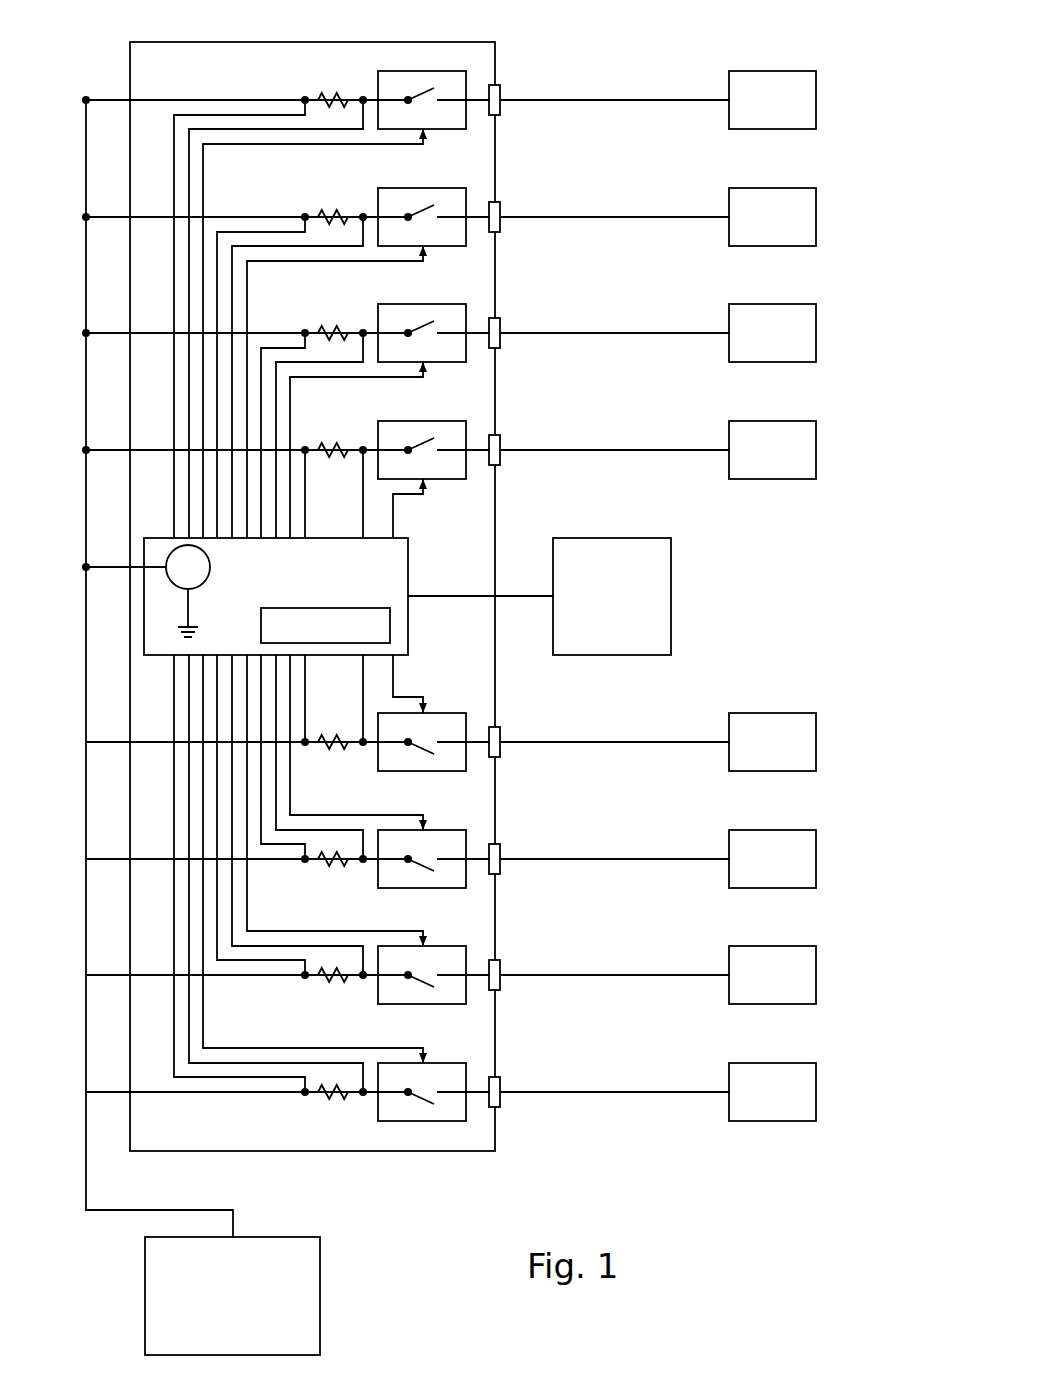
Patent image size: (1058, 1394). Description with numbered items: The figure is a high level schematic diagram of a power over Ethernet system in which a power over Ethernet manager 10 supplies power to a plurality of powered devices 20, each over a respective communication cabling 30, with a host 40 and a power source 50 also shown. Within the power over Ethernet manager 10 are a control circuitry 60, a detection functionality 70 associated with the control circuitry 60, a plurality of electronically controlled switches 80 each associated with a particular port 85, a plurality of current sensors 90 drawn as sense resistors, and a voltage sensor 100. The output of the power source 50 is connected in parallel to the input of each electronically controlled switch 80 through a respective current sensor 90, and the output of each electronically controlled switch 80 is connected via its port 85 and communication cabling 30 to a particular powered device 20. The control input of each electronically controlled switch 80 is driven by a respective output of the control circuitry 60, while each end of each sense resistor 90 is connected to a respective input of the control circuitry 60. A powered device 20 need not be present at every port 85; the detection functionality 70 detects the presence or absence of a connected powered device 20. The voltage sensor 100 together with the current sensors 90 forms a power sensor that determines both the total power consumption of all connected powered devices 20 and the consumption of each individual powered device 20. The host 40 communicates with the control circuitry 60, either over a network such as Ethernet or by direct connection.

The power over Ethernet manager 10 is at (385, 1151).
The powered device 20 is at (758, 70).
The communication cabling 30 is at (605, 100).
The host 40 is at (612, 538).
The power source 50 is at (260, 1237).
The control circuitry 60 is at (408, 557).
The detection functionality 70 is at (390, 620).
The electronically controlled switch 80 is at (466, 82).
The port 85 is at (502, 108).
The current sensor 90 is at (338, 92).
The voltage sensor 100 is at (165, 553).